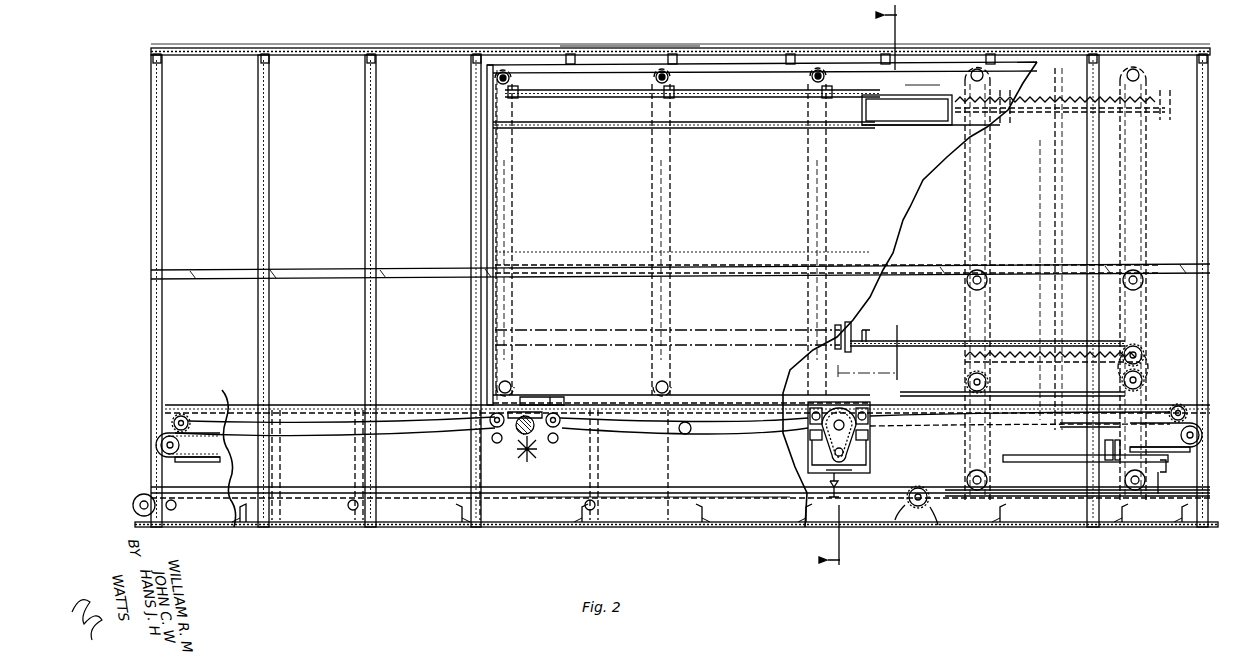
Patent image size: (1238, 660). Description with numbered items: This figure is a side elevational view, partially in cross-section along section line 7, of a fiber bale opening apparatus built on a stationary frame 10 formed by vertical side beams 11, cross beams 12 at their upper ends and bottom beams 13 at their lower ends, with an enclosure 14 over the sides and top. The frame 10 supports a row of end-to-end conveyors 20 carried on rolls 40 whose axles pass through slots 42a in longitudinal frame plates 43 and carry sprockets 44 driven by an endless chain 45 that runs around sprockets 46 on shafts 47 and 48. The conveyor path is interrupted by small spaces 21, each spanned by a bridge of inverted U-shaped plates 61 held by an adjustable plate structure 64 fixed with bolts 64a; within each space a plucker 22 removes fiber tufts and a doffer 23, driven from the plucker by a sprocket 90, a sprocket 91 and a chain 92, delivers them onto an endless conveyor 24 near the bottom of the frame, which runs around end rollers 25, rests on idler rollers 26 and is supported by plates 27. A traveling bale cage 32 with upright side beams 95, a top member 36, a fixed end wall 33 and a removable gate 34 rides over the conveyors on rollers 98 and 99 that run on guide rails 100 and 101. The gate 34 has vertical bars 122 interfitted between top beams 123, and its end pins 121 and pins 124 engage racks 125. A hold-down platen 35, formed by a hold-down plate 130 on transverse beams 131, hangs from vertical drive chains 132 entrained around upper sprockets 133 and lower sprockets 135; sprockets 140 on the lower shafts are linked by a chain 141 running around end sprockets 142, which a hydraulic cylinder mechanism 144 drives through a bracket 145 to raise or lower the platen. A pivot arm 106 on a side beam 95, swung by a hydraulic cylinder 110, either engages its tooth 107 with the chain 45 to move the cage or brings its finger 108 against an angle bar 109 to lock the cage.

The stationary frame 10 is at (450, 48).
The enclosure 14 is at (223, 48).
The side beams 11 is at (260, 144).
The cross beams 12 is at (372, 57).
The guide rail 101 is at (338, 277).
The conveyors 20 is at (416, 405).
The plates 27 is at (312, 496).
The bottom beams 13 is at (245, 525).
The fixed end wall 33 is at (497, 205).
The hold-down platen 35 is at (778, 128).
The sprockets 133 is at (505, 91).
The beams 131 is at (518, 86).
The side beams 95 is at (665, 165).
The drive chains 132 is at (992, 192).
The hydraulic cylinder mechanism 144 is at (760, 330).
The sprockets 135 is at (675, 370).
The hold-down plate 130 is at (896, 125).
The beams 123 is at (948, 125).
The end pins 121 is at (1057, 94).
The racks 125 is at (1002, 100).
The vertical bars 122 is at (1050, 204).
The removable gate 34 is at (1050, 218).
The rollers 99 is at (966, 281).
The chain 141 is at (930, 341).
The bracket 145 is at (870, 330).
The pins 124 is at (1050, 342).
The sprockets 140 is at (991, 378).
The end sprockets 142 is at (1150, 361).
The sprocket 90 is at (842, 424).
The slots 42a is at (813, 403).
The bolts 64a is at (868, 435).
The adjustable plate structure 64 is at (870, 456).
The chain 92 is at (833, 440).
The sprocket 91 is at (830, 470).
The frame plates 43 is at (755, 397).
The section line 7- 7 is at (865, 287).
The bale cage 32 is at (925, 88).
The top member 36 is at (603, 49).
The spaces 21 is at (542, 402).
The rolls 40 is at (480, 423).
The sprockets 44 is at (190, 425).
The sprockets 46 is at (168, 430).
The shaft 48 is at (160, 446).
The shaft 47 is at (1200, 439).
The endless chain 45 is at (190, 461).
The end rollers 25 is at (136, 495).
The idler rollers 26 is at (176, 507).
The plucker 22 is at (520, 437).
The bridge plates 61 is at (492, 444).
The doffer 23 is at (543, 461).
The endless conveyor 24 is at (647, 486).
The rollers 98 is at (987, 478).
The guide rail 100 is at (1027, 490).
The pivot arm 106 is at (1083, 462).
The tooth 107 is at (1100, 444).
The hydraulic cylinder 110 is at (1100, 426).
The finger 108 is at (1182, 470).
The angle bar 109 is at (1160, 495).